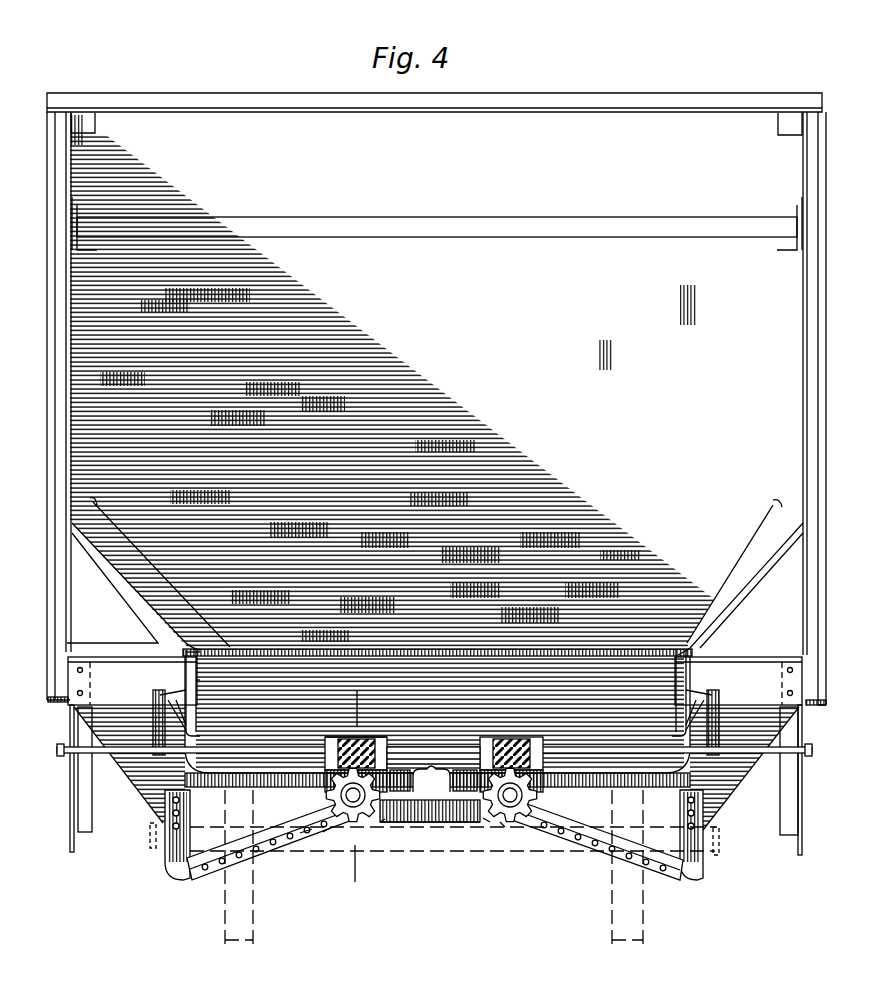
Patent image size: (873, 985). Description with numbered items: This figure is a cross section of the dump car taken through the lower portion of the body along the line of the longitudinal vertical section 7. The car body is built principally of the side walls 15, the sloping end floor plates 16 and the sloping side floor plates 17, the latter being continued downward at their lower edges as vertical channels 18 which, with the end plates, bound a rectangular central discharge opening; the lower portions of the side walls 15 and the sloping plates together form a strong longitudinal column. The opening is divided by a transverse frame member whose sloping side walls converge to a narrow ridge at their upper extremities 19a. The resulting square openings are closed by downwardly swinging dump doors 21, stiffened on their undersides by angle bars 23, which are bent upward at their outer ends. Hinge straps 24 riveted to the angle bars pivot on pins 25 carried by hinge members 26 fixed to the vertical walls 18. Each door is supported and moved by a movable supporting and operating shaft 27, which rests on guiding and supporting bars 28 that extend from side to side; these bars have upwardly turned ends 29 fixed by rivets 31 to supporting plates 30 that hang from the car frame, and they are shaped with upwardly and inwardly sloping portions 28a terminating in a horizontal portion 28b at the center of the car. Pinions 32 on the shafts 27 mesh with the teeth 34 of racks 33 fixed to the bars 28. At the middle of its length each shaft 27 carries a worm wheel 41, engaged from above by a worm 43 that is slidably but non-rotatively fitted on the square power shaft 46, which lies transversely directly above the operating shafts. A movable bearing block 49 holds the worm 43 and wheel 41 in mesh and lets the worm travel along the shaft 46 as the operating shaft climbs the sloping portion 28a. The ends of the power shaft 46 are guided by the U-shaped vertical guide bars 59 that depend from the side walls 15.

The longitudinal vertical section 7 is at (372, 703).
The side walls 15 is at (71, 452).
The sloping end floor plates 16 is at (470, 624).
The sloping side floor plates 17 is at (168, 615).
The channels 18 is at (198, 708).
The upper extremities 19a is at (567, 647).
The dump doors 21 is at (284, 773).
The angle bars 23 is at (172, 766).
The hinge straps 24 is at (172, 684).
The pins 25 is at (204, 670).
The hinge members 26 is at (203, 685).
The supporting and operating shafts 27 is at (323, 832).
The guiding and supporting bars 28 is at (417, 808).
The upwardly and inwardly sloping portions 28a is at (307, 838).
The horizontal portion 28b is at (403, 833).
The upwardly turned ends 29 is at (170, 840).
The supporting plates 30 is at (127, 785).
The rivets 31 is at (188, 810).
The pinions 32 is at (385, 819).
The racks 33 is at (203, 873).
The teeth 34 is at (228, 873).
The worm wheel 41 is at (330, 796).
The worm 43 is at (365, 738).
The shaft 46 is at (445, 748).
The movable bearing block 49 is at (383, 738).
The vertical guide bar 59 is at (82, 804).